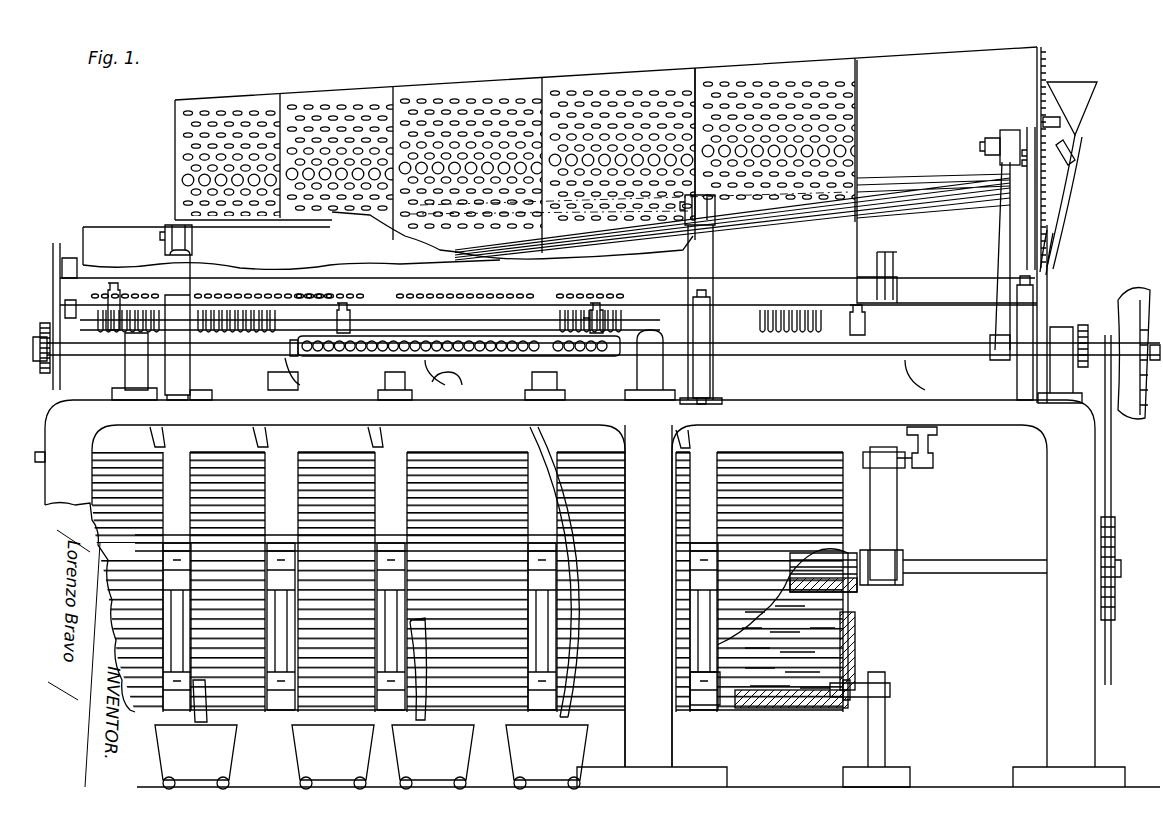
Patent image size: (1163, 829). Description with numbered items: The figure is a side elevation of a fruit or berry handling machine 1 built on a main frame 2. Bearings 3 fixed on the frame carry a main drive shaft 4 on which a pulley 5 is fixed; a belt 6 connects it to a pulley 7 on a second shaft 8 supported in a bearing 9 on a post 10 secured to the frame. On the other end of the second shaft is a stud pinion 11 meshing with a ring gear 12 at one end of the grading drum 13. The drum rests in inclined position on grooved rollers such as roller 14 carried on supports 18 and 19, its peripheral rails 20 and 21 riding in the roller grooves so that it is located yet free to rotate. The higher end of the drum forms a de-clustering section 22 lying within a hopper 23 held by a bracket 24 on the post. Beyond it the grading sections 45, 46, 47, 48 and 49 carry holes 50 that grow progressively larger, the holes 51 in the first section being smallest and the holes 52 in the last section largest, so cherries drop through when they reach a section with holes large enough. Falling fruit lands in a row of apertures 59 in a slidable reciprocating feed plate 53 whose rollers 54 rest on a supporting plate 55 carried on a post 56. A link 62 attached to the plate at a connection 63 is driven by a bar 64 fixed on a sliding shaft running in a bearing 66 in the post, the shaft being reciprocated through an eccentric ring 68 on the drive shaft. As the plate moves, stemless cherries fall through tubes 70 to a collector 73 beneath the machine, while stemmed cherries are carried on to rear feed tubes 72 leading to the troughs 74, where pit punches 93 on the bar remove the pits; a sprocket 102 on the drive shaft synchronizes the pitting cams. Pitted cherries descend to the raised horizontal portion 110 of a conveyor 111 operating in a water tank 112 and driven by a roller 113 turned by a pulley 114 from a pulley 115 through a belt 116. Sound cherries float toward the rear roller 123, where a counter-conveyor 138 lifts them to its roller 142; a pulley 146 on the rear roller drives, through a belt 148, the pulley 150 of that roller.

The fruit or berry handling machine 1 is at (1080, 75).
The main frame 2 is at (60, 448).
The bearing 3 is at (1062, 340).
The main drive shaft 4 is at (37, 350).
The pulley 5 is at (1000, 358).
The belt 6 is at (1000, 285).
The pulley 7 is at (1014, 130).
The second shaft 8 is at (990, 146).
The bearing 9 is at (1031, 130).
The post 10 is at (1035, 280).
The stud pinion 11 is at (1058, 150).
The ring gear 12 is at (1042, 48).
The grading drum 13 is at (578, 144).
The grooved roller 14 is at (170, 248).
The support 18 is at (713, 260).
The support 19 is at (180, 262).
The peripheral rail 20 is at (695, 68).
The peripheral rail 21 is at (180, 98).
The de-clustering section 22 is at (948, 198).
The hopper 23 is at (1072, 100).
The bracket 24 is at (1050, 212).
The grading section 45 is at (785, 121).
The grading section 46 is at (589, 76).
The grading section 47 is at (482, 133).
The grading section 48 is at (322, 93).
The grading section 49 is at (237, 150).
The holes 50 is at (492, 93).
The holes 51 is at (800, 75).
The holes 52 is at (185, 180).
The feed plate 53 is at (320, 272).
The roller 54 is at (65, 300).
The supporting plate 55 is at (842, 304).
The post 56 is at (868, 322).
The apertures 59 is at (438, 291).
The link 62 is at (337, 322).
The connection 63 is at (605, 316).
The bar 64 is at (592, 326).
The bearing 66 is at (308, 360).
The eccentric ring 68 is at (707, 308).
The tube 70 is at (262, 440).
The rear feed tube 72 is at (245, 340).
The collector 73 is at (371, 757).
The trough 74 is at (120, 340).
The pit punch 93 is at (363, 357).
The sprocket 102 is at (40, 325).
The raised horizontal portion 110 is at (605, 695).
The conveyor 111 is at (149, 725).
The water tank 112 is at (270, 650).
The roller 113 is at (857, 590).
The pulley 114 is at (1116, 618).
The pulley 115 is at (1128, 268).
The belt 116 is at (1112, 472).
The roller 123 is at (905, 580).
The counter-conveyor 138 is at (473, 584).
The roller 142 is at (935, 458).
The pulley 146 is at (1020, 568).
The belt 148 is at (895, 510).
The pulley 150 is at (866, 455).